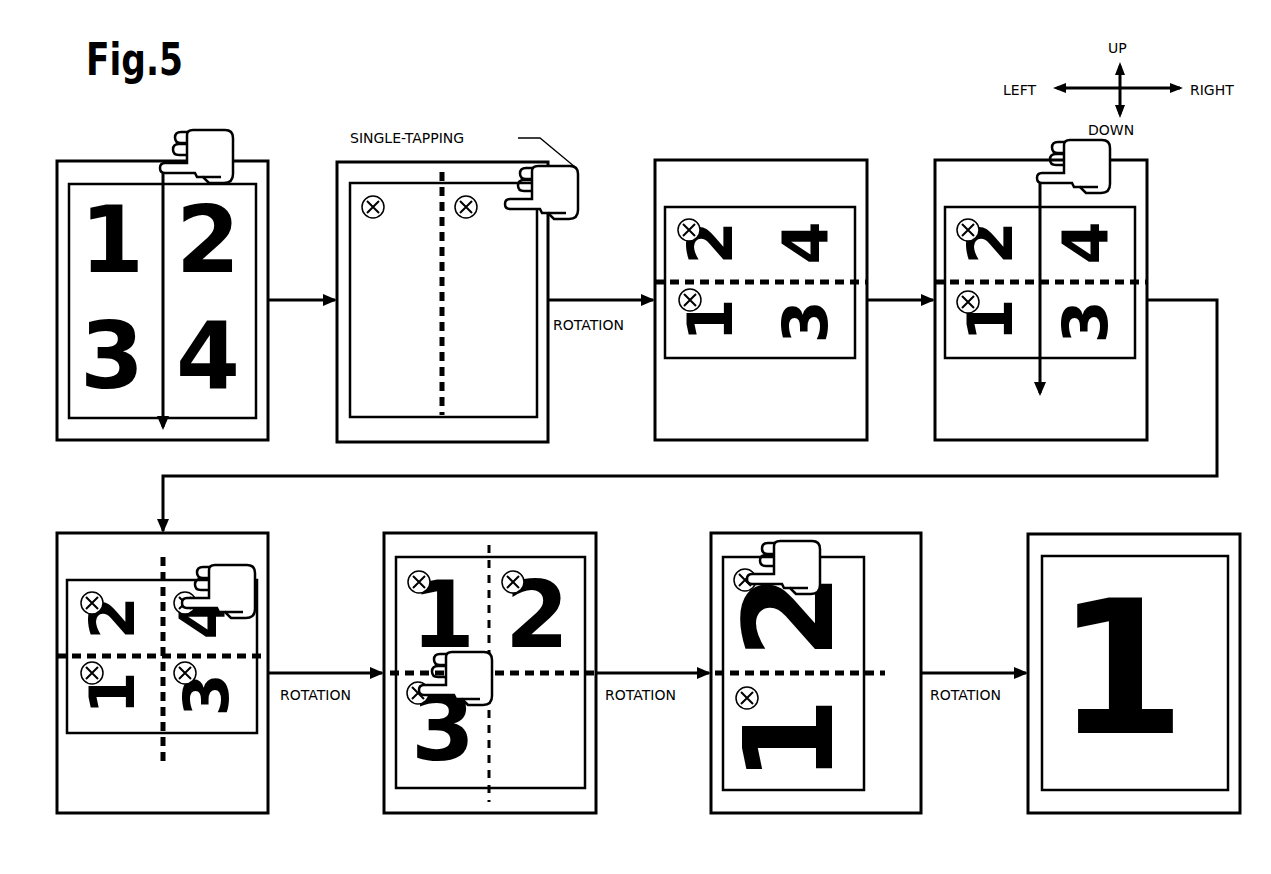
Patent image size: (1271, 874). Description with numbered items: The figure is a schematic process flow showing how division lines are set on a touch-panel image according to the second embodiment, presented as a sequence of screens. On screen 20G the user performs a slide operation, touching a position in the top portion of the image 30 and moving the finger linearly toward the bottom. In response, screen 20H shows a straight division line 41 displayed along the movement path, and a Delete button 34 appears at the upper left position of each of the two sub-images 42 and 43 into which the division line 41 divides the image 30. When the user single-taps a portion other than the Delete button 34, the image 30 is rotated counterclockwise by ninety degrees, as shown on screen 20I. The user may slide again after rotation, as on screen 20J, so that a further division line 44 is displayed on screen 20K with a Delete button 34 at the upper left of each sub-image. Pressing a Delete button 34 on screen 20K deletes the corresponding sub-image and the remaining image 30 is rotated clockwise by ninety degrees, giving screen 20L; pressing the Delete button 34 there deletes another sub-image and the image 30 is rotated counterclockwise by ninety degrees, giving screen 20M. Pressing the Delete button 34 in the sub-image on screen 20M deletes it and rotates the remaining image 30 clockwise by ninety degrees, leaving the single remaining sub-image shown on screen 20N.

The screen 20G is at (80, 161).
The screen 20H is at (340, 162).
The screen 20I is at (713, 160).
The screen 20J is at (940, 160).
The screen 20K is at (82, 533).
The screen 20L is at (400, 533).
The screen 20M is at (735, 533).
The screen 20N is at (1085, 534).
The image 30 is at (130, 184).
The Delete button 34 is at (362, 208).
The division line 41 is at (445, 396).
The sub-image 42 is at (378, 393).
The sub-image 43 is at (510, 393).
The division line 44 is at (165, 740).